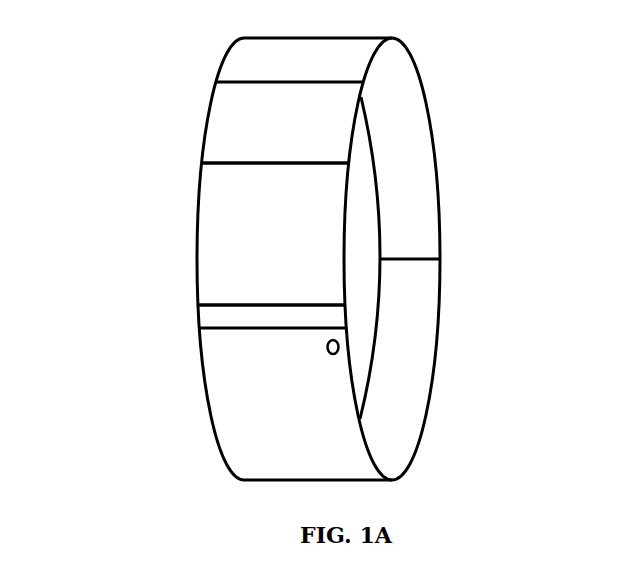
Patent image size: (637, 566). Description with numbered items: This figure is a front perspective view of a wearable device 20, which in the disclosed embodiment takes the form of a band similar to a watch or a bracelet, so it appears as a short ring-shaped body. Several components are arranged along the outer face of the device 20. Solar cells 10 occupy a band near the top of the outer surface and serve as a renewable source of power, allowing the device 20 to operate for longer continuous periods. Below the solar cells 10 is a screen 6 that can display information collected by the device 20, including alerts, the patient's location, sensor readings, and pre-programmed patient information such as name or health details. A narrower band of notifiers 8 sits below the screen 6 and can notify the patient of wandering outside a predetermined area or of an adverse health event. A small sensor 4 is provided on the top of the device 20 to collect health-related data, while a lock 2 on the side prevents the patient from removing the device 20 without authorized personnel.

The lock 2 is at (432, 257).
The sensors 4 is at (341, 346).
The screen 6 is at (232, 245).
The notifiers 8 is at (232, 317).
The solar cells 10 is at (232, 110).
The device 20 is at (425, 82).